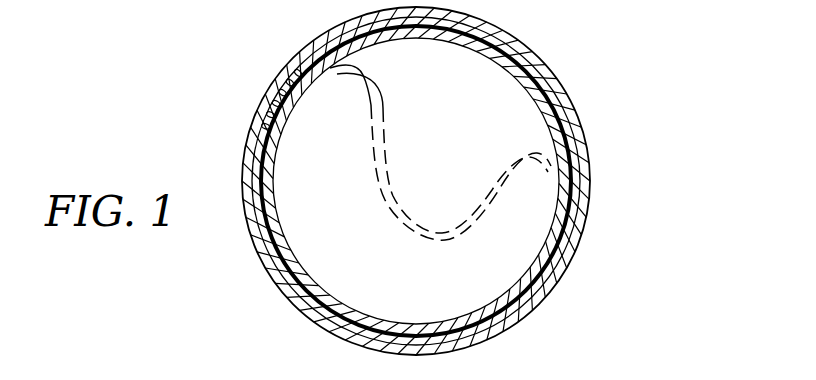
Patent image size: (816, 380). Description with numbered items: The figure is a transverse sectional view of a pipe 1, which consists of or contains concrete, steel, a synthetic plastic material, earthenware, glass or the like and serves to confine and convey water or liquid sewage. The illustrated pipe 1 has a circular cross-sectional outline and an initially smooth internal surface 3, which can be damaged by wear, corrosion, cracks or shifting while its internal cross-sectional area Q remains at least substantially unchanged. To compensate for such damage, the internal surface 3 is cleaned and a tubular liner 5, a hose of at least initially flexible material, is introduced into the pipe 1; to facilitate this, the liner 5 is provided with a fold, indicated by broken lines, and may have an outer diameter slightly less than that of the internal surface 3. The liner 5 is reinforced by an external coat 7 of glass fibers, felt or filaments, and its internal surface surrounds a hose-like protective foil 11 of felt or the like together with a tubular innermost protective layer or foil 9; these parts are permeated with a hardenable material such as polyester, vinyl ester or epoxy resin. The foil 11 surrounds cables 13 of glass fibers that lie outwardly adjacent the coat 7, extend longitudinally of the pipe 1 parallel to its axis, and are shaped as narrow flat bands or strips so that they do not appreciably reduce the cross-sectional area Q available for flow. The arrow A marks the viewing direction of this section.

The pipe 1 is at (523, 36).
The internal surface 3 is at (575, 188).
The tubular liner 5 is at (535, 109).
The external coat 7 is at (490, 321).
The innermost protective layer or foil 9 is at (507, 287).
The protective foil 11 is at (565, 233).
The cables 13 is at (275, 96).
The viewing direction A is at (265, 78).
The internal cross-sectional area Q is at (440, 152).